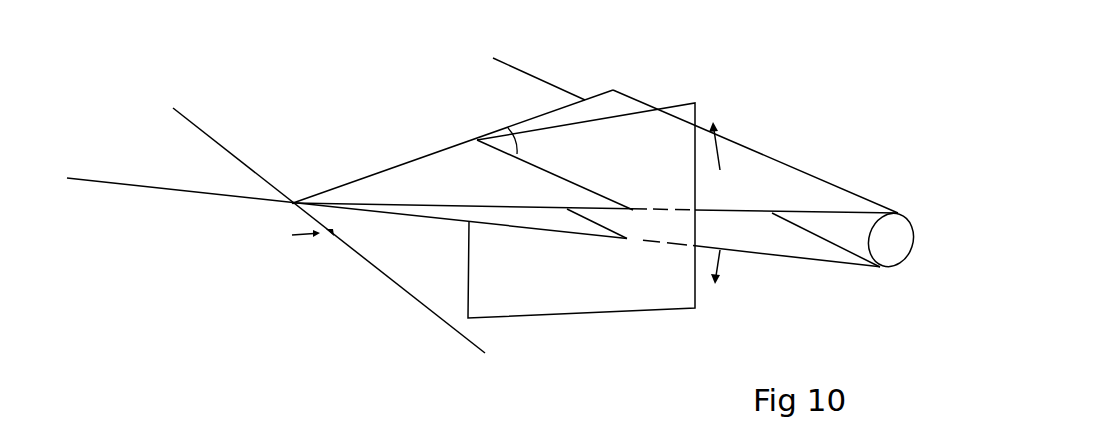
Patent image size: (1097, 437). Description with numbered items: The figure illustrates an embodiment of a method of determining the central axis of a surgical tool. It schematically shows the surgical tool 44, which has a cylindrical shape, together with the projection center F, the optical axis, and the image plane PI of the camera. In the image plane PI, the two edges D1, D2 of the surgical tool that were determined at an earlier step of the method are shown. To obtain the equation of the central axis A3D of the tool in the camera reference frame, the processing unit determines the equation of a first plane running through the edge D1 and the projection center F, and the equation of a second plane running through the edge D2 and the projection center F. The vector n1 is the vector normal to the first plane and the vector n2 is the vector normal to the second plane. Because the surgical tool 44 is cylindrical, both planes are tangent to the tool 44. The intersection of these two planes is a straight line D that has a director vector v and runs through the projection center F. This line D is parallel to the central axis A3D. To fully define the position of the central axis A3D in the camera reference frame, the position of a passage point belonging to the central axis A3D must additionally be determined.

The surgical tool 44 is at (897, 248).
The projection center F is at (290, 205).
The straight line D is at (407, 295).
The director vector v is at (306, 243).
The edge D1 is at (508, 130).
The edge D2 is at (563, 233).
The central axis A3D is at (532, 72).
The image plane PI is at (640, 313).
The normal vector n1 is at (720, 147).
The normal vector n2 is at (720, 257).